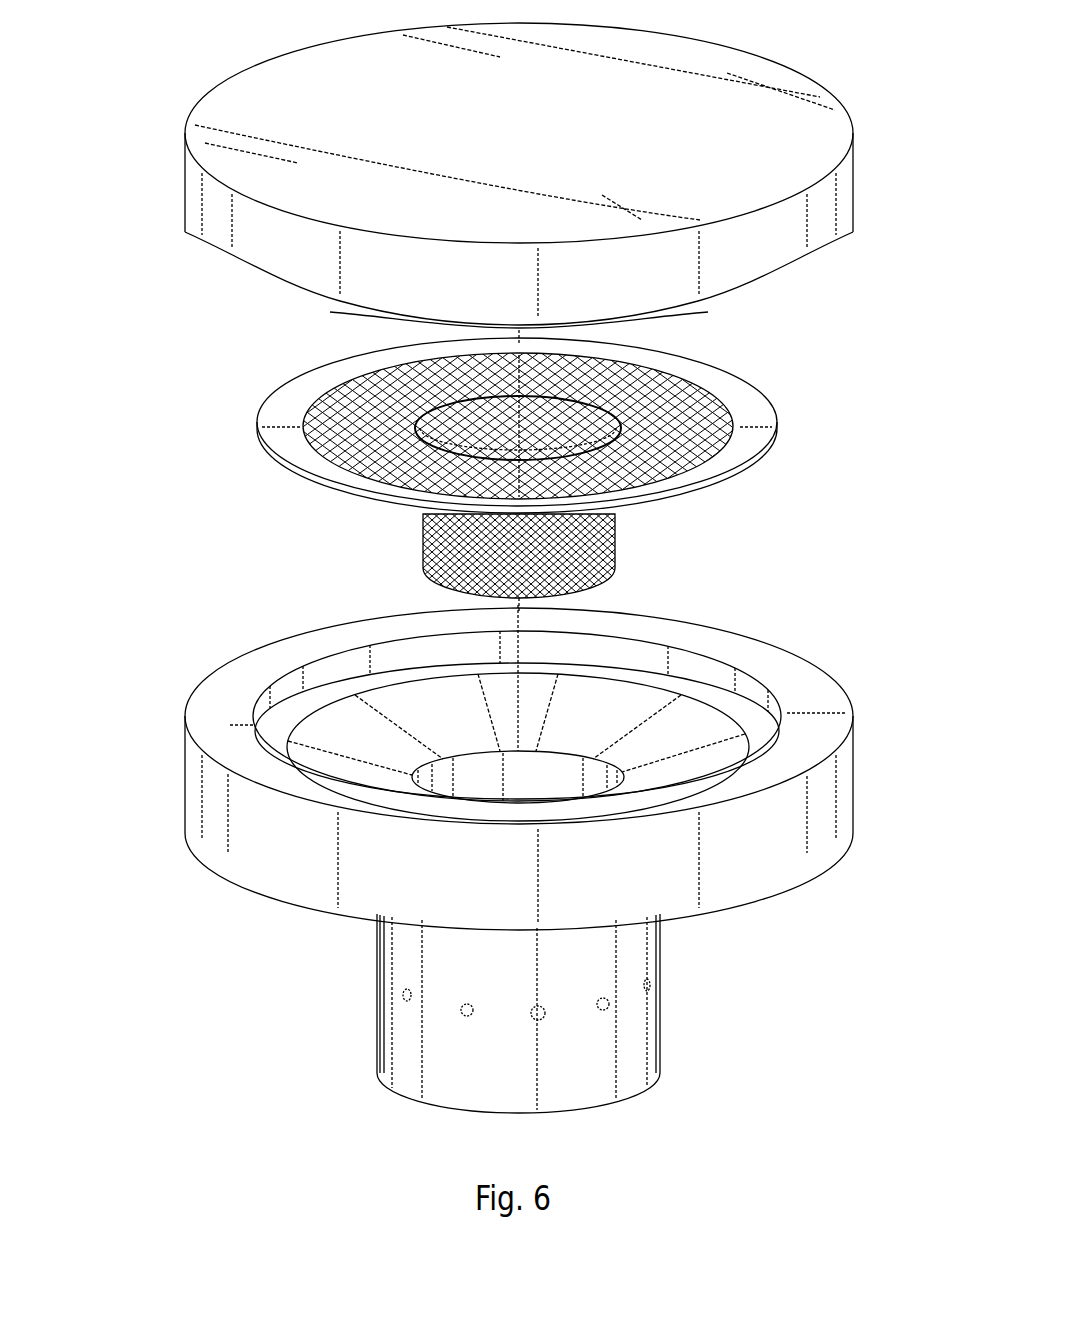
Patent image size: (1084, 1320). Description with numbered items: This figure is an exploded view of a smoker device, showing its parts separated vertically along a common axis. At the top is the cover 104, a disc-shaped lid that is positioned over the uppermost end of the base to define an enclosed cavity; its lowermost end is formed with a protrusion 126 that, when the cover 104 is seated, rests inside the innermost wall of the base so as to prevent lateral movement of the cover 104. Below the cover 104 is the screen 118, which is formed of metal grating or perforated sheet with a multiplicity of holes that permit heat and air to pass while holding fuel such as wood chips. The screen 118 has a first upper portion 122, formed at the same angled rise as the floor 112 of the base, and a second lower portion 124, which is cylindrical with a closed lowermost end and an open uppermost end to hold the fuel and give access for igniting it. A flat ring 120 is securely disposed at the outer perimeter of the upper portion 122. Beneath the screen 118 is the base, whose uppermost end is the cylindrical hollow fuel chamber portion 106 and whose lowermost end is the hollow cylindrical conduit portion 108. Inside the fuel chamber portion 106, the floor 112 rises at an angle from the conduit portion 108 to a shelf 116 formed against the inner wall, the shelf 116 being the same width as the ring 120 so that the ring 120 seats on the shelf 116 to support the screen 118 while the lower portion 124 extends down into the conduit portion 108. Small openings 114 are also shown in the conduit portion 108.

The cover 104 is at (852, 135).
The protrusion 126 is at (642, 322).
The flat ring 120 is at (280, 412).
The screen 118 is at (777, 418).
The first upper portion 122 is at (678, 390).
The second lower portion 124 is at (617, 545).
The fuel chamber portion 106 is at (195, 780).
The shelf 116 is at (298, 712).
The floor 112 is at (473, 725).
The conduit portion 108 is at (658, 1045).
The holes 114 is at (465, 1012).